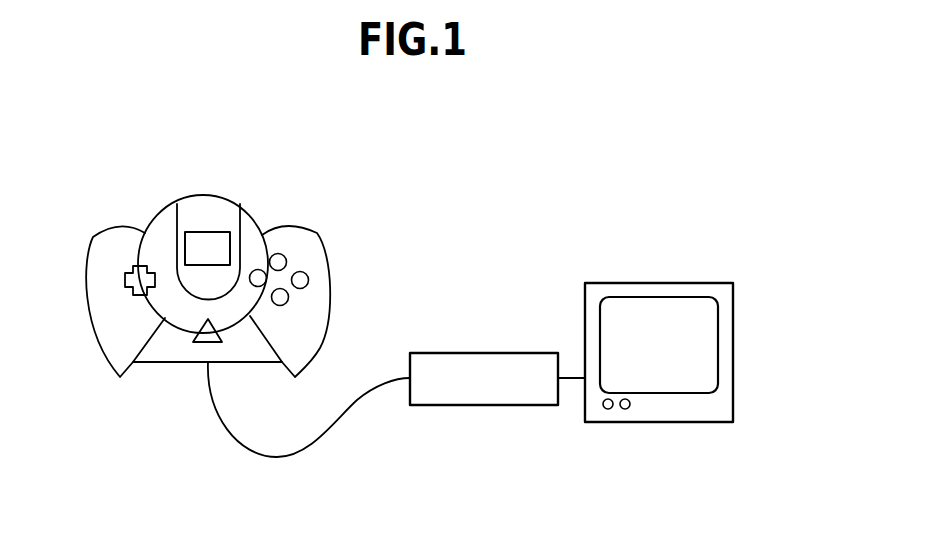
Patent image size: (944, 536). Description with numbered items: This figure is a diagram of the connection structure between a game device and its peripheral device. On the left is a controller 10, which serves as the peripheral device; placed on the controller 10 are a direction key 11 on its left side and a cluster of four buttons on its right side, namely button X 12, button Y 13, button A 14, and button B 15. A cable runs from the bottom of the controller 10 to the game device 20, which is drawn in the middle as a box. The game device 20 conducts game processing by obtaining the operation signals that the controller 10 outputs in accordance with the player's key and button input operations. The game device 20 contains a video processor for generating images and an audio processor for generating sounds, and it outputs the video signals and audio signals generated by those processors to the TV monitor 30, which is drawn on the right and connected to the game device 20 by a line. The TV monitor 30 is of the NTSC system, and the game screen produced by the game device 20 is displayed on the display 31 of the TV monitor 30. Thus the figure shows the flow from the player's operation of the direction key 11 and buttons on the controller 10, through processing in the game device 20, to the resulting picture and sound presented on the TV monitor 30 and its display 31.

The controller 10 is at (222, 186).
The direction key 11 is at (125, 279).
The button X 12 is at (271, 255).
The button Y 13 is at (287, 261).
The button A 14 is at (289, 297).
The button B 15 is at (309, 280).
The game device 20 is at (478, 352).
The TV monitor 30 is at (637, 282).
The display 31 is at (680, 358).